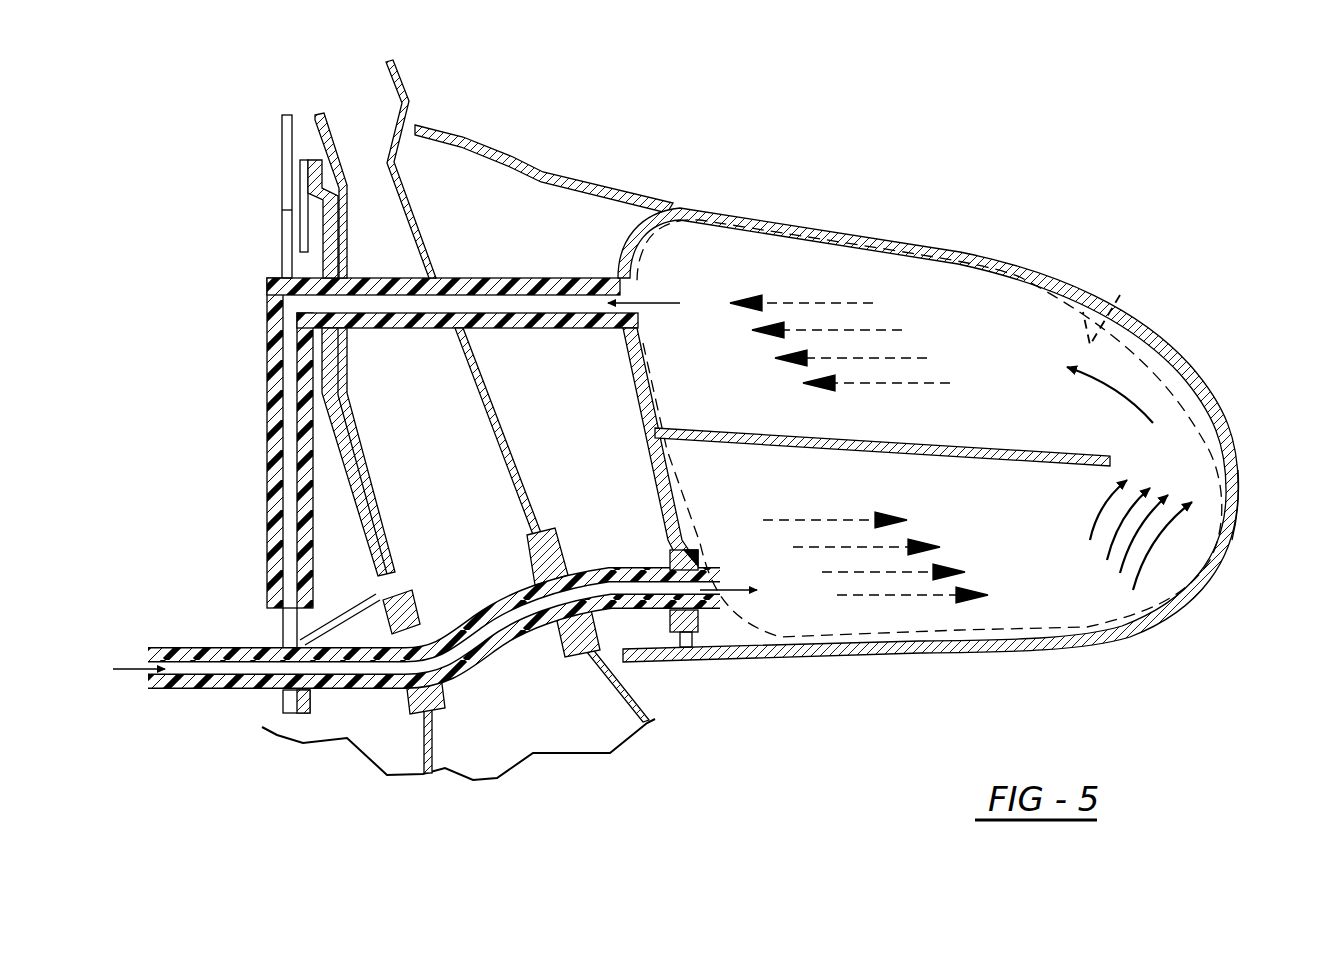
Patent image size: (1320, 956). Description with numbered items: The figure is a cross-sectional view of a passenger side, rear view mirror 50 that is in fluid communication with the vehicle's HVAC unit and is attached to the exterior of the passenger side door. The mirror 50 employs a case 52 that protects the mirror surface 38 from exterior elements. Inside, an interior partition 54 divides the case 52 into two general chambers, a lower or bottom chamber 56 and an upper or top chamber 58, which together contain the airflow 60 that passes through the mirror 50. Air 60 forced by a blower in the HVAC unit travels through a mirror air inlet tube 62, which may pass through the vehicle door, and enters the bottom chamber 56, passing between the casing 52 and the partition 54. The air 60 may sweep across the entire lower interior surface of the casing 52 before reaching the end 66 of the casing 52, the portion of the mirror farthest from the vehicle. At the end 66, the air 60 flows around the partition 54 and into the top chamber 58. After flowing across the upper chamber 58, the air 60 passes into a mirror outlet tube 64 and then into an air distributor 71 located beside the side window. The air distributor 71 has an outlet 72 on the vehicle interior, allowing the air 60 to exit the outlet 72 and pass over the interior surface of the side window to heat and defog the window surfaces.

The mirror surface 38 is at (1120, 295).
The passenger side, rear view mirror 50 is at (798, 135).
The case 52 is at (635, 408).
The interior partition 54 is at (970, 462).
The bottom chamber 56 is at (978, 538).
The top chamber 58 is at (999, 352).
The airflow 60 is at (657, 303).
The mirror air inlet tube 62 is at (470, 597).
The mirror outlet tube 64 is at (403, 328).
The end 66 is at (1237, 527).
The air distributor 71 is at (262, 445).
The outlet 72 is at (262, 338).